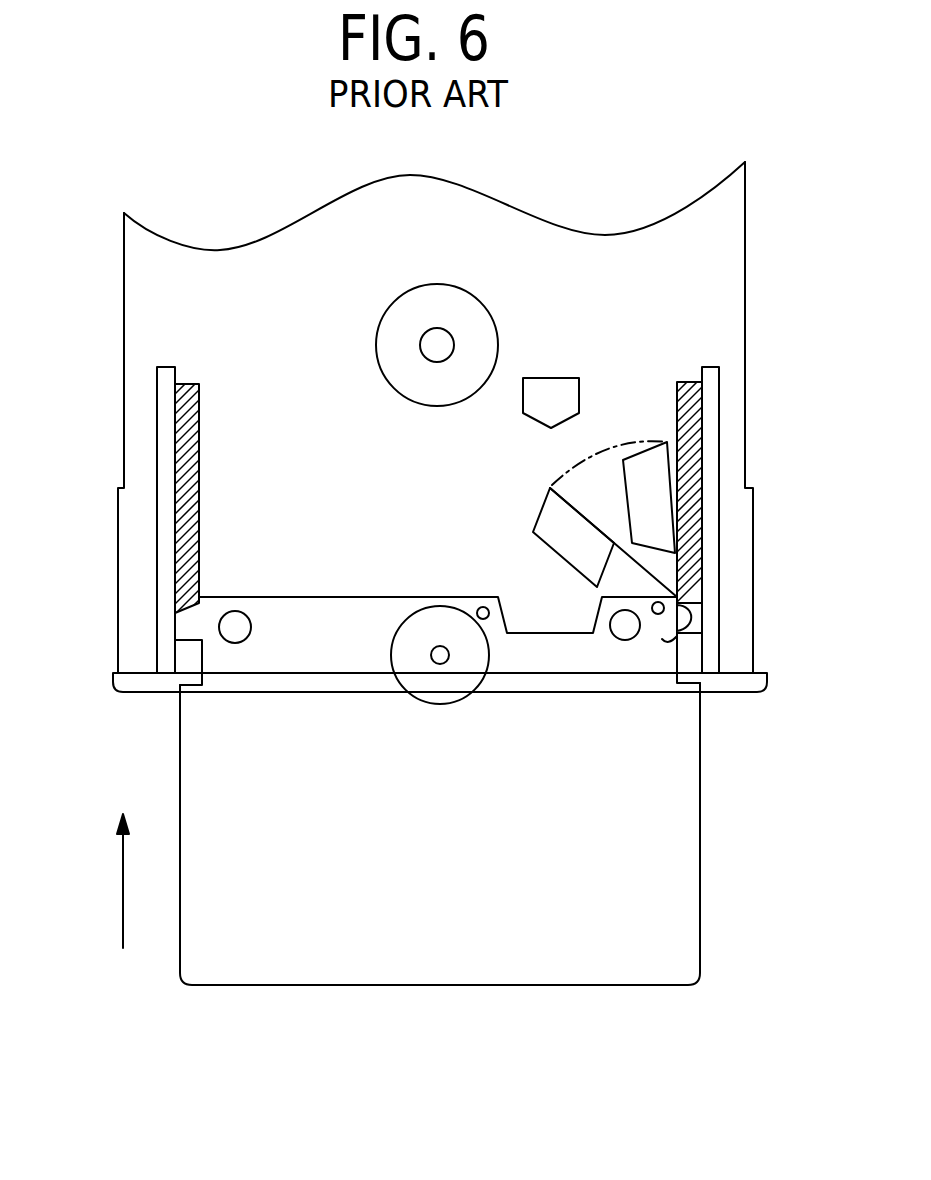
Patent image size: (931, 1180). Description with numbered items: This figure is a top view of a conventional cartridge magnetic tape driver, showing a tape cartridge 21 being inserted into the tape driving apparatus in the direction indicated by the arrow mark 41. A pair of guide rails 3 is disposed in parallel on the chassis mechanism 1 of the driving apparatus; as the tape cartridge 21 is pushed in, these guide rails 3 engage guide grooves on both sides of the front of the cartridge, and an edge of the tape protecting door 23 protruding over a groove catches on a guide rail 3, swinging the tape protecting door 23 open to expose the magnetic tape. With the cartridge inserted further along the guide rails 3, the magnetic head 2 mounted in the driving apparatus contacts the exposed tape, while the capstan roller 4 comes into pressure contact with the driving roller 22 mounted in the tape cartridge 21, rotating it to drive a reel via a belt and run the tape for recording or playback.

The chassis mechanism 1 is at (255, 282).
The magnetic head 2 is at (550, 403).
The guide rails 3 is at (182, 507).
The capstan roller 4 is at (417, 298).
The tape cartridge 21 is at (278, 915).
The driving roller 22 is at (477, 650).
The tape protecting door 23 is at (572, 527).
The arrow mark 41 is at (122, 897).